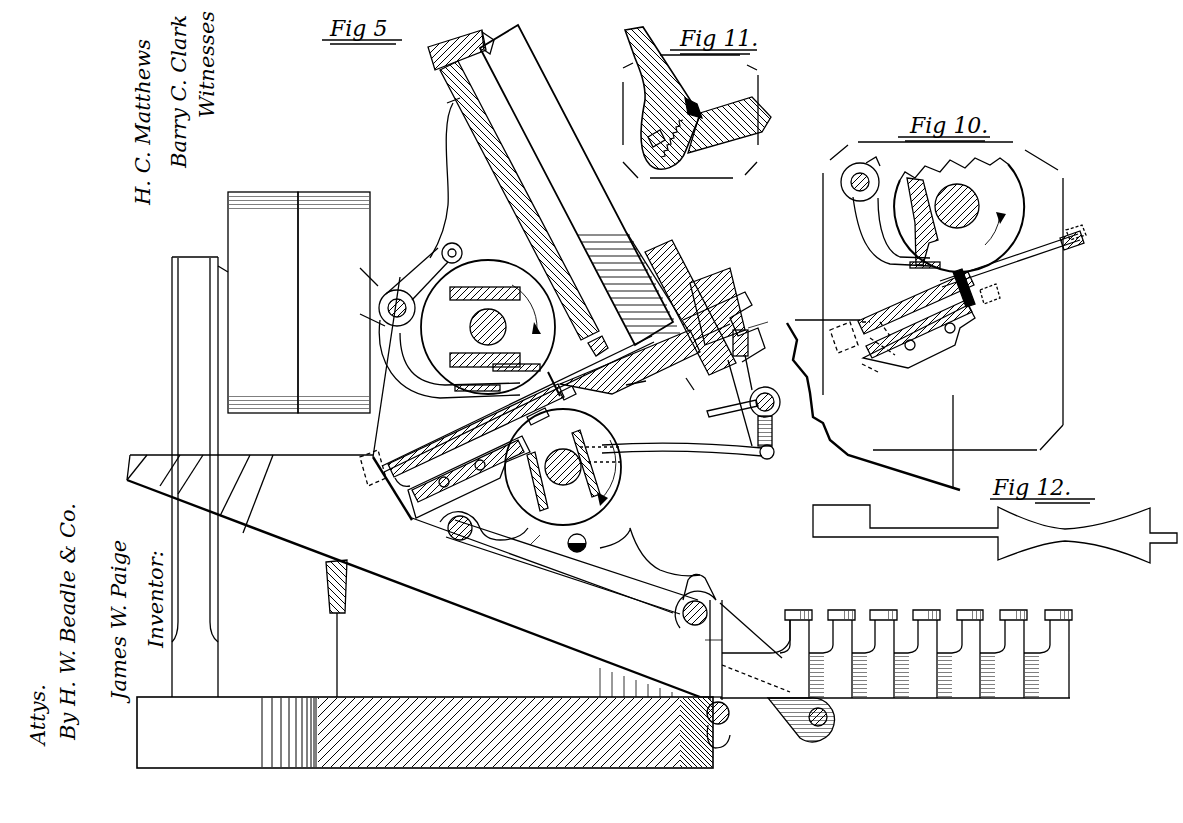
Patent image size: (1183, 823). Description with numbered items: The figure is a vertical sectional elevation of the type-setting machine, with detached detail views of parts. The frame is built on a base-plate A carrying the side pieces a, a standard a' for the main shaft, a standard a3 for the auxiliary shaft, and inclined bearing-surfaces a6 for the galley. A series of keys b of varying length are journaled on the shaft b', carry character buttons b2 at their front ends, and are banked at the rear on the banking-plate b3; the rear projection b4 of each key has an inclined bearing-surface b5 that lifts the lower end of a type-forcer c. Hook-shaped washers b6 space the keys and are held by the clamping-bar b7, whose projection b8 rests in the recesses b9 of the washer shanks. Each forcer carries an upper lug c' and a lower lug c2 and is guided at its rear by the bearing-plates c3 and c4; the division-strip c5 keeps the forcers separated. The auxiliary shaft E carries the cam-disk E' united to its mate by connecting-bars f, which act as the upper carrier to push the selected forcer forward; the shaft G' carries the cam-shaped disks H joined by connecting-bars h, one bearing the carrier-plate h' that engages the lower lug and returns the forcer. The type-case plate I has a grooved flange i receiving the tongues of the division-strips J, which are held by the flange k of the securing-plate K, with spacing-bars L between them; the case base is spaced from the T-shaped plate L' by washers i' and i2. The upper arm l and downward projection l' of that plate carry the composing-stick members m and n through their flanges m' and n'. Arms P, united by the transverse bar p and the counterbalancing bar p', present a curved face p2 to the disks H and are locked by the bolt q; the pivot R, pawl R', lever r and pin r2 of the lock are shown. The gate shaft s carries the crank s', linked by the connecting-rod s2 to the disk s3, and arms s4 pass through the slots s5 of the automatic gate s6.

In FIG. 5, the base-plate A is at (425, 732).
In FIG. 5, the side pieces a is at (413, 400).
In FIG. 5, the standard a' is at (185, 477).
In FIG. 5, the standard a3 is at (263, 302).
In FIG. 5, the inclined bearing-surface a6 is at (334, 302).
In FIG. 5, the keys b is at (606, 590).
In FIG. 5, the shaft b' is at (732, 633).
In FIG. 5, the buttons b2 is at (935, 603).
In FIG. 5, the banking-plate b3 is at (326, 590).
In FIG. 5, the projection b4 is at (373, 476).
In FIG. 10, the projection b4 is at (873, 405).
In FIG. 5, the inclined bearing-surface b5 is at (407, 491).
In FIG. 10, the inclined bearing-surface b5 is at (874, 358).
In FIG. 5, the washers b6 is at (710, 660).
In FIG. 5, the clamping-bar b7 is at (728, 738).
In FIG. 5, the projection b8 is at (729, 712).
In FIG. 5, the recesses b9 is at (708, 695).
In FIG. 5, the type-forcers c is at (536, 422).
In FIG. 10, the type-forcers c is at (1075, 246).
In FIG. 5, the upper lug c' is at (504, 408).
In FIG. 10, the upper lug c' is at (946, 289).
In FIG. 5, the lower lug c2 is at (577, 404).
In FIG. 10, the lower lug c2 is at (983, 292).
In FIG. 5, the bearing-plate c3 is at (432, 444).
In FIG. 10, the bearing-plate c3 is at (905, 310).
In FIG. 5, the bearing-plate c4 is at (472, 478).
In FIG. 10, the bearing-plate c4 is at (962, 332).
In FIG. 5, the cam piece c5 is at (766, 318).
In FIG. 12, the cam piece c5 is at (995, 534).
In FIG. 5, the auxiliary shaft E is at (496, 327).
In FIG. 10, the auxiliary shaft E is at (965, 206).
In FIG. 5, the cam-disk E' is at (488, 318).
In FIG. 10, the cam-disk E' is at (970, 215).
In FIG. 5, the connecting-bars f is at (468, 287).
In FIG. 10, the connecting-bars f is at (910, 198).
In FIG. 5, the shaft G' is at (554, 454).
In FIG. 5, the cam-shaped disks H is at (622, 486).
In FIG. 5, the connecting-bars h is at (569, 470).
In FIG. 5, the carrier-plate h' is at (607, 444).
In FIG. 5, the plate I is at (455, 93).
In FIG. 5, the grooved flange i is at (598, 336).
In FIG. 11, the grooved flange i is at (694, 97).
In FIG. 5, the tooth i' is at (636, 391).
In FIG. 11, the teeth i2 is at (689, 125).
In FIG. 5, the division-strips J is at (534, 72).
In FIG. 5, the securing-plate K is at (455, 44).
In FIG. 5, the flange k is at (492, 43).
In FIG. 5, the spacing-bars L is at (519, 200).
In FIG. 11, the spacing-bars L is at (662, 98).
In FIG. 5, the T-shaped plate L' is at (630, 363).
In FIG. 11, the T-shaped plate L' is at (729, 129).
In FIG. 5, the upper arm l is at (634, 275).
In FIG. 11, the upper arm l is at (645, 137).
In FIG. 5, the downward projection l' is at (685, 393).
In FIG. 5, the plate m is at (718, 304).
In FIG. 5, the right-angled flange m' is at (690, 307).
In FIG. 5, the plate n is at (725, 325).
In FIG. 5, the right-angled flange n' is at (751, 343).
In FIG. 5, the arms P is at (573, 567).
In FIG. 5, the transverse bar p is at (476, 523).
In FIG. 5, the bar p' is at (814, 720).
In FIG. 5, the curved upper face p2 is at (530, 542).
In FIG. 5, the bolt q is at (586, 547).
In FIG. 5, the pivot R is at (413, 287).
In FIG. 10, the pivot R is at (871, 176).
In FIG. 5, the pawl R' is at (477, 379).
In FIG. 10, the pawl R' is at (913, 253).
In FIG. 5, the lever r is at (412, 382).
In FIG. 10, the lever r is at (860, 240).
In FIG. 5, the pin r2 is at (442, 256).
In FIG. 5, the shaft s is at (770, 397).
In FIG. 5, the crank s' is at (777, 431).
In FIG. 5, the connecting-rod s2 is at (672, 445).
In FIG. 5, the disk s3 is at (736, 395).
In FIG. 5, the arms s4 is at (724, 405).
In FIG. 5, the elongated slots s5 is at (740, 403).
In FIG. 5, the gate s6 is at (757, 452).